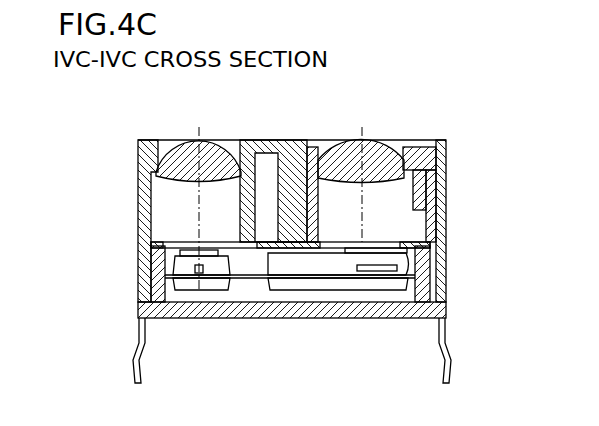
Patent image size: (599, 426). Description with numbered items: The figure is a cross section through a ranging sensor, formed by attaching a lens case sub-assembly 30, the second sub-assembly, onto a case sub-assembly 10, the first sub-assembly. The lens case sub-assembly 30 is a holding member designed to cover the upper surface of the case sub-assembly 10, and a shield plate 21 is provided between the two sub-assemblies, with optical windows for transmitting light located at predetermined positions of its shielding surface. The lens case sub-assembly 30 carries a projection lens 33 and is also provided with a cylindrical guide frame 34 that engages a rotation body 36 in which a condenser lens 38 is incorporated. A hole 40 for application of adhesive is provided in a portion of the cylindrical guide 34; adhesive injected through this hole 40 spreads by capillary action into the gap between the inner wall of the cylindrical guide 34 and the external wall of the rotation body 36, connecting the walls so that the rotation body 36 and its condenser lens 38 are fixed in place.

The lens case sub-assembly 30 is at (132, 192).
The projection lens 33 is at (229, 141).
The condenser lens 38 is at (370, 141).
The cylindrical guide frame 34 is at (447, 155).
The rotation body 36 is at (447, 179).
The hole for application of adhesive 40 is at (441, 202).
The shield plate 21 is at (432, 247).
The case sub-assembly 10 is at (407, 297).